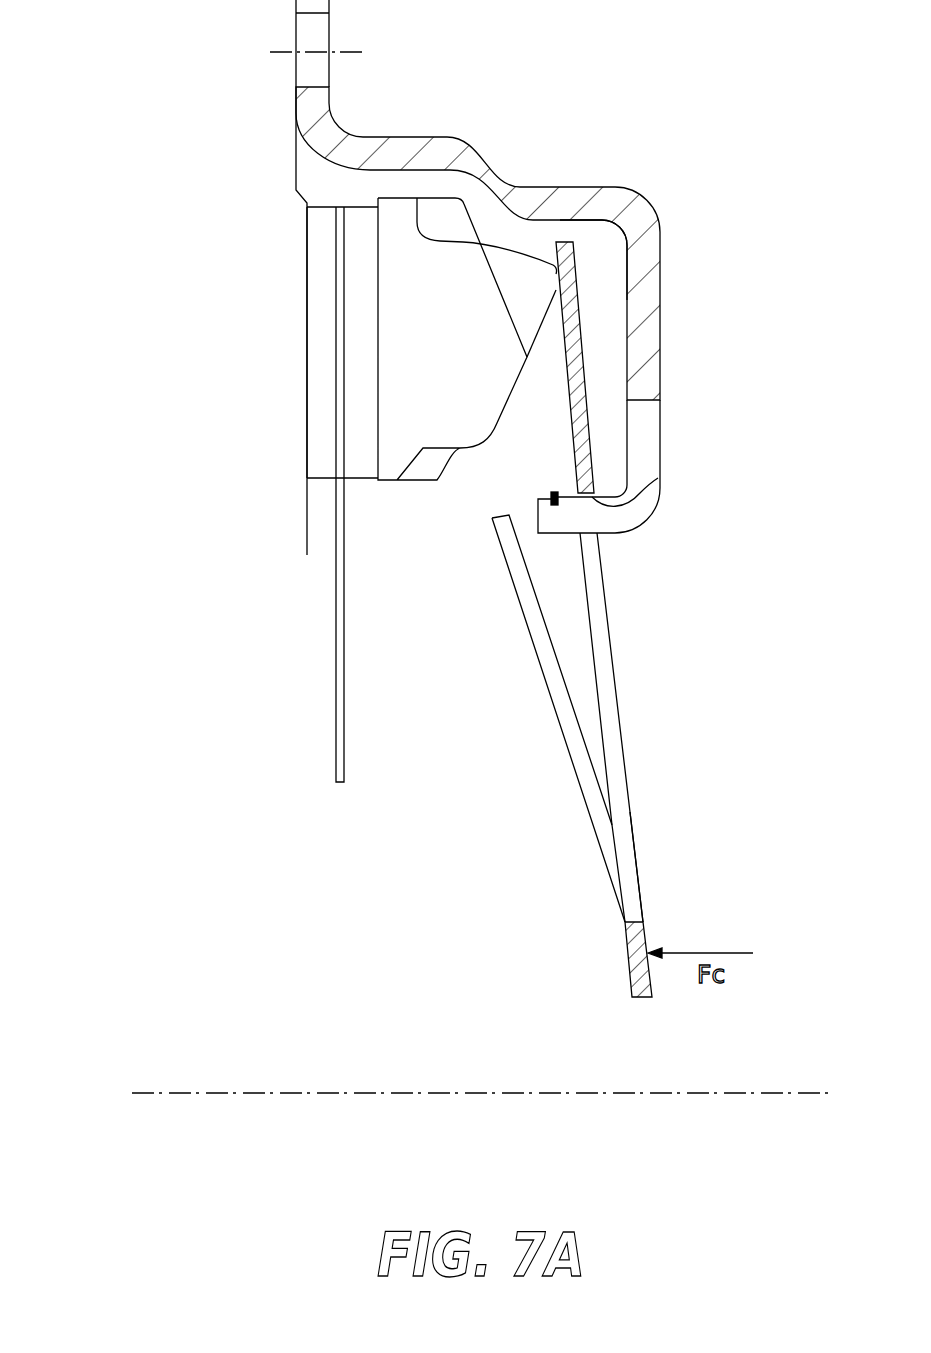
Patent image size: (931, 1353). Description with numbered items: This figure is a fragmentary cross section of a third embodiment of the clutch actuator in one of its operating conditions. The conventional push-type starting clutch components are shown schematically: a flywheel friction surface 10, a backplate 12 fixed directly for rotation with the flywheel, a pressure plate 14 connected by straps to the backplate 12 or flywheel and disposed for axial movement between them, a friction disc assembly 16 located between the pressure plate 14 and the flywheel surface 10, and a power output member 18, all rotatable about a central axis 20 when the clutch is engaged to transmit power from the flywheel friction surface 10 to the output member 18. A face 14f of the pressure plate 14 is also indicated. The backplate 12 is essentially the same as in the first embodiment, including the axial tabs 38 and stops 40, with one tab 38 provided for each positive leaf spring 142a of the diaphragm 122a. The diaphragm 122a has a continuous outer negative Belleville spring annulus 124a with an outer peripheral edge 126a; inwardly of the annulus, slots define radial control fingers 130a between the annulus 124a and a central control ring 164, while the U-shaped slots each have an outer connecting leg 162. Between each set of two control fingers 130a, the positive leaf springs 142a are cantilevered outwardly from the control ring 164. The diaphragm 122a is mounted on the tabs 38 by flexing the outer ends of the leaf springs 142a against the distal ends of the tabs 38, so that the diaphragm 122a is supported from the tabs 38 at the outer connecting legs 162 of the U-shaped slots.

The flywheel friction surface 10 is at (308, 527).
The backplate 12 is at (565, 190).
The pressure plate 14 is at (453, 347).
The face of bearing member 14f is at (562, 286).
The friction disc assembly 16 is at (312, 378).
The power output member 18 is at (340, 728).
The central axis 20 is at (727, 1094).
The axial tab 38 is at (622, 520).
The stop 40 is at (551, 495).
The diaphragm 122a is at (652, 827).
The negative Belleville spring annulus 124a is at (577, 340).
The outer peripheral edge 126a is at (553, 243).
The radial control finger 130a is at (610, 767).
The positive leaf spring 142a is at (545, 678).
The outer connecting leg 162 is at (658, 479).
The central control ring 164 is at (640, 938).